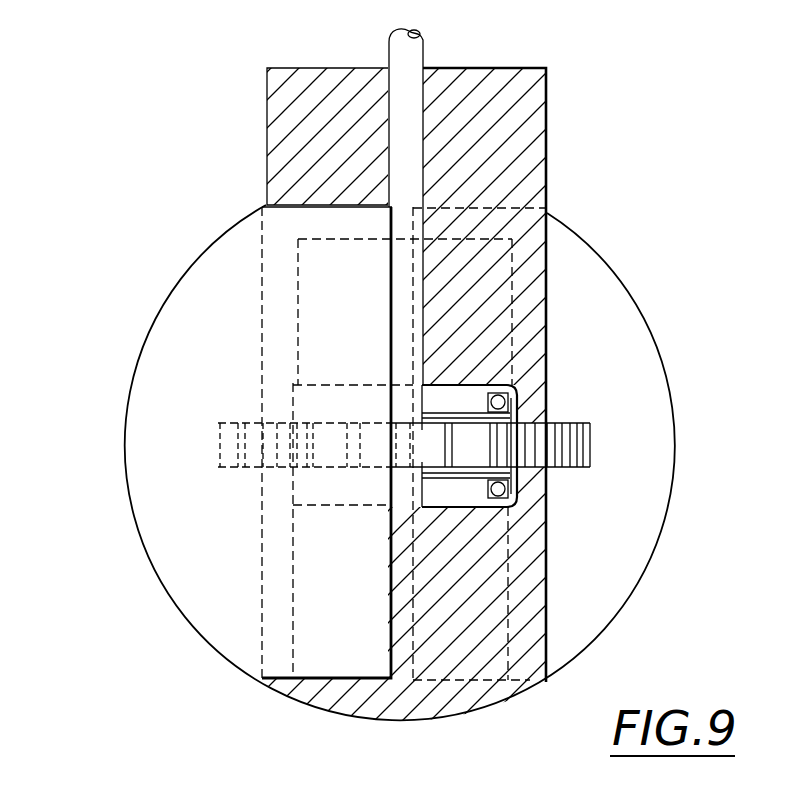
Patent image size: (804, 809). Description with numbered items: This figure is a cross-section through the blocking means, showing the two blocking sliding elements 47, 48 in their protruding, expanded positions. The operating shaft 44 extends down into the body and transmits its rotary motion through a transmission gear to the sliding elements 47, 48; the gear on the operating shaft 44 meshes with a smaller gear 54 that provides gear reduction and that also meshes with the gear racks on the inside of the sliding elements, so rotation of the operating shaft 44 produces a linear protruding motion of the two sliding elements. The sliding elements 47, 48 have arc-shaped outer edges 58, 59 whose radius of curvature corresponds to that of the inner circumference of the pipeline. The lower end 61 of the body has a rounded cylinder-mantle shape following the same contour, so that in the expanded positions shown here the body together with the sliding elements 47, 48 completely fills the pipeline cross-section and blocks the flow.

The operating shaft 44 is at (412, 55).
The blocking sliding element 47 is at (170, 340).
The blocking sliding element 48 is at (630, 332).
The smaller gear 54 is at (567, 457).
The arc-shaped outer edge 58 is at (126, 443).
The arc-shaped outer edge 59 is at (672, 388).
The lower end 61 is at (397, 720).